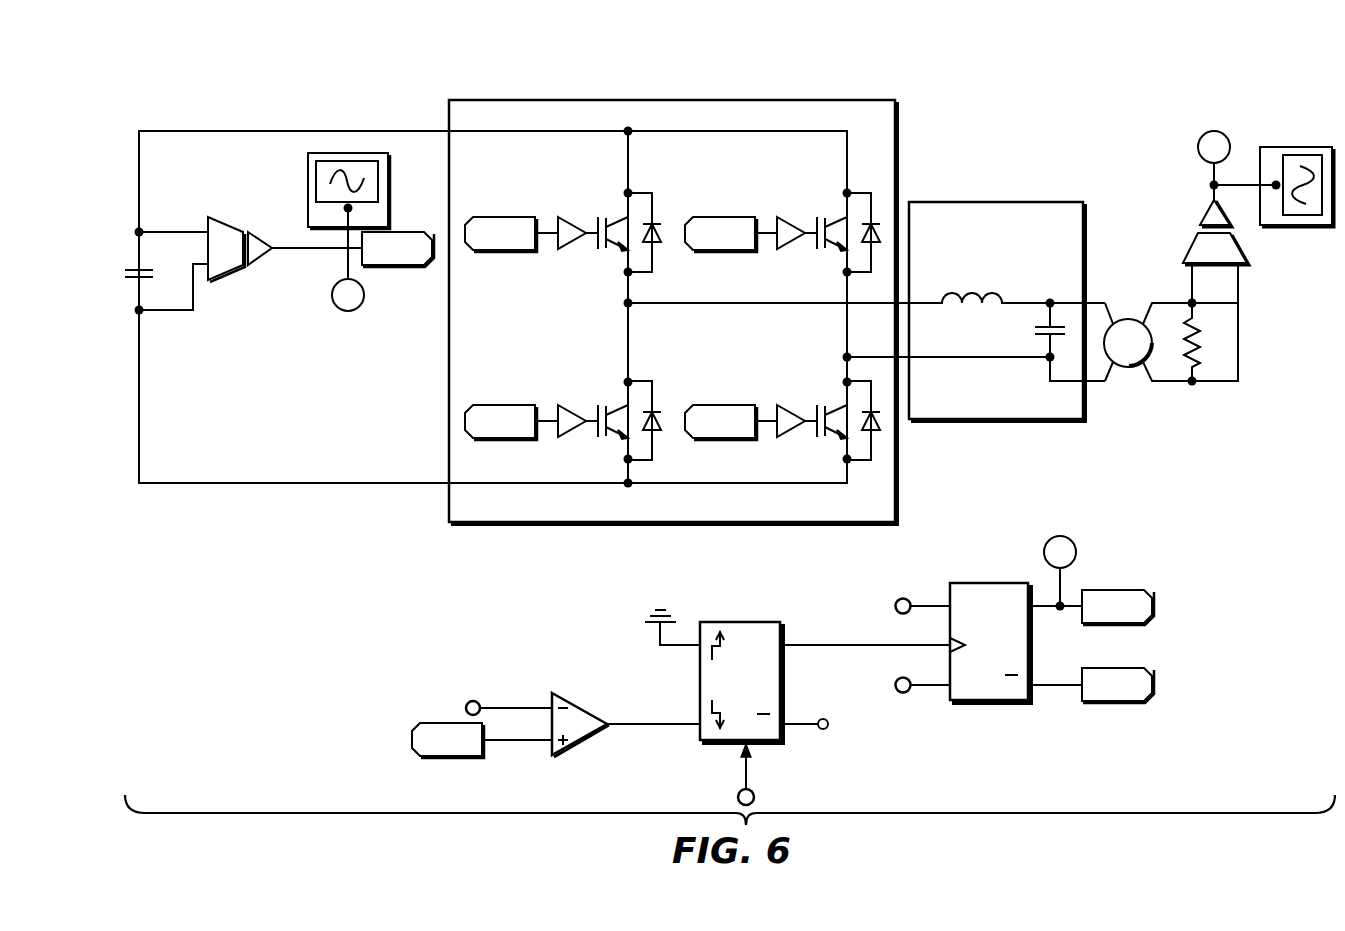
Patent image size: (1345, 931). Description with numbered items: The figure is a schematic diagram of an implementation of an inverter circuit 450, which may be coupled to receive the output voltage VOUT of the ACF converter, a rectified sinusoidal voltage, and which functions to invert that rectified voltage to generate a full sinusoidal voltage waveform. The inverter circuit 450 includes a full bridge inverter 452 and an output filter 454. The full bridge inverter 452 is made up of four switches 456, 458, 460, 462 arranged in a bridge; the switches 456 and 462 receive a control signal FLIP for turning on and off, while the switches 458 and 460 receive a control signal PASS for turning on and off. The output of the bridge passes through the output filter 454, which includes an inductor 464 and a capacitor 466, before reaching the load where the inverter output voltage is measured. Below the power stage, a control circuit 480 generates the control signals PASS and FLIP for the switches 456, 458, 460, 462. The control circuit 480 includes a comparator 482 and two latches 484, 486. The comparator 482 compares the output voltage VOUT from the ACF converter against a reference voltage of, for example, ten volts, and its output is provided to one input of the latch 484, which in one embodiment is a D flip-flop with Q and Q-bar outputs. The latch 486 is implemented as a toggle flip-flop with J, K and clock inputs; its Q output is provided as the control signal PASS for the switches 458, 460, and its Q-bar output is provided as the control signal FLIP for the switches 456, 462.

The inverter circuit 450 is at (1255, 86).
The full bridge inverter 452 is at (897, 143).
The output filter 454 is at (995, 202).
The switch 456 is at (597, 243).
The switch 458 is at (597, 410).
The switch 460 is at (817, 243).
The switch 462 is at (817, 410).
The inductor 464 is at (972, 306).
The capacitor 466 is at (1046, 338).
The control circuit 480 is at (1132, 547).
The comparator 482 is at (582, 700).
The latch 484 is at (723, 622).
The latch 486 is at (975, 583).